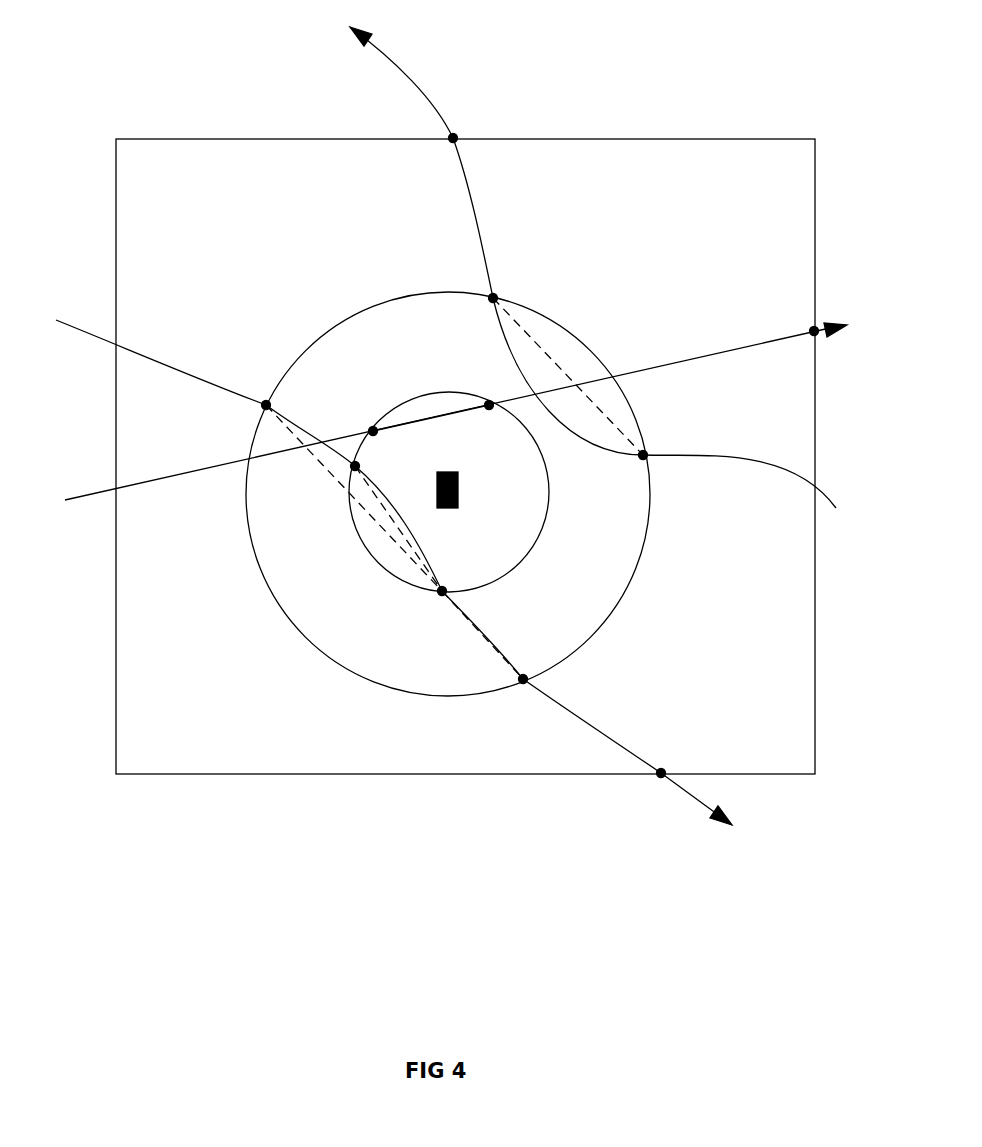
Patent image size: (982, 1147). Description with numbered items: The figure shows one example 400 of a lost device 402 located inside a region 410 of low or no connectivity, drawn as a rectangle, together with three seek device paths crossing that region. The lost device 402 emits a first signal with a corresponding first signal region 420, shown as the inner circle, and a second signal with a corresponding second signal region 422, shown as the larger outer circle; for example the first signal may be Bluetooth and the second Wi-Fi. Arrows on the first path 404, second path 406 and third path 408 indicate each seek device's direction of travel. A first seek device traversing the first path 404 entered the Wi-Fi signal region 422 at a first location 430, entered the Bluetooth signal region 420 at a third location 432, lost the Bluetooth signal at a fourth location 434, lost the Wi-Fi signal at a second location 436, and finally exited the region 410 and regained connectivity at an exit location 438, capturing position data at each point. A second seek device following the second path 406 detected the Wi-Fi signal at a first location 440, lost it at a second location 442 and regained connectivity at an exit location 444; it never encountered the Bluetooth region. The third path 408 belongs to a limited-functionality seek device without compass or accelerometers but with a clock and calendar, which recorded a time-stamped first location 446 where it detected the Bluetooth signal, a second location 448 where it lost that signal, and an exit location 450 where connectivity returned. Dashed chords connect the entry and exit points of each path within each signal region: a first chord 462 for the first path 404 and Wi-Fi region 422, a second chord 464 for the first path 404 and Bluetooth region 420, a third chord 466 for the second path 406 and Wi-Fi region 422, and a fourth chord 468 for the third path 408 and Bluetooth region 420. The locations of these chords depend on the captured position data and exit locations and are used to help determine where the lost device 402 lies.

The example 400 is at (90, 99).
The lost device 402 is at (458, 490).
The first path 404 is at (82, 337).
The second path 406 is at (828, 495).
The third path 408 is at (92, 495).
The region 410 is at (280, 139).
The first signal region 420 is at (507, 580).
The second signal region 422 is at (598, 640).
The first location 430 is at (270, 404).
The third location 432 is at (360, 466).
The fourth location 434 is at (440, 594).
The second location 436 is at (521, 683).
The exit location 438 is at (658, 776).
The first location 440 is at (647, 454).
The second location 442 is at (496, 296).
The exit location 444 is at (457, 137).
The first location 446 is at (372, 430).
The second location 448 is at (489, 402).
The exit location 450 is at (812, 330).
The first chord 462 is at (318, 470).
The second chord 464 is at (403, 528).
The third chord 466 is at (553, 355).
The fourth chord 468 is at (447, 420).